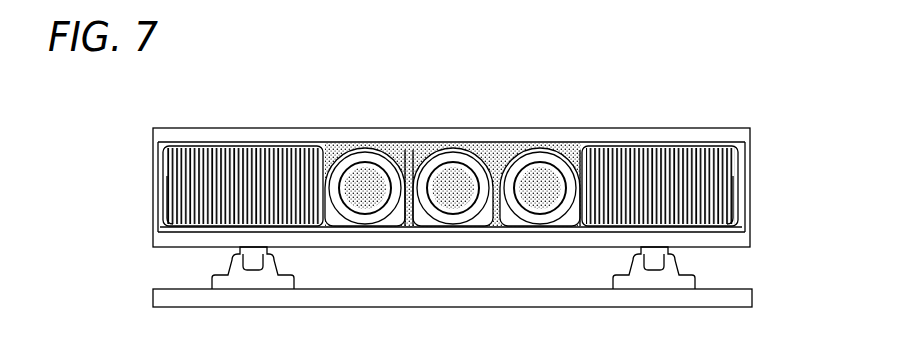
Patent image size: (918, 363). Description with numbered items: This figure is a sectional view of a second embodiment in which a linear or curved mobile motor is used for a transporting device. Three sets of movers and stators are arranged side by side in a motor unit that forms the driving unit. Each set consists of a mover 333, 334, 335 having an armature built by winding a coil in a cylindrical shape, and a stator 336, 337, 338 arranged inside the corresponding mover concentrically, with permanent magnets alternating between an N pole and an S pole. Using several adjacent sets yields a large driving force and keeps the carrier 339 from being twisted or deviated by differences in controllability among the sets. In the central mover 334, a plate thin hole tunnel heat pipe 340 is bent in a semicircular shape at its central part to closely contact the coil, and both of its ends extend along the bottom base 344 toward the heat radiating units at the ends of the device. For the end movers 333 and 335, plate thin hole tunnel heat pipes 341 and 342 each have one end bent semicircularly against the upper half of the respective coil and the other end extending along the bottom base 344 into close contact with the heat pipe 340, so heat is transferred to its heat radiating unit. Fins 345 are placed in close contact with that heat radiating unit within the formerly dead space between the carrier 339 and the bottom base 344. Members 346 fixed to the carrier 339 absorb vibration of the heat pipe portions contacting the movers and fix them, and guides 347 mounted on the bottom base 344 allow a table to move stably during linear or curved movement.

The mover 333 is at (361, 163).
The mover 334 is at (450, 163).
The mover 335 is at (536, 163).
The stator 336 is at (352, 157).
The stator 337 is at (461, 158).
The stator 338 is at (555, 157).
The carrier 339 is at (735, 136).
The plate thin hole tunnel heat pipe 340 is at (412, 150).
The plate thin hole tunnel heat pipe 341 is at (163, 206).
The plate thin hole tunnel heat pipe 342 is at (577, 150).
The bottom base 344 is at (735, 237).
The fins 345 is at (160, 152).
The members 346 is at (323, 152).
The guides 347 is at (247, 262).